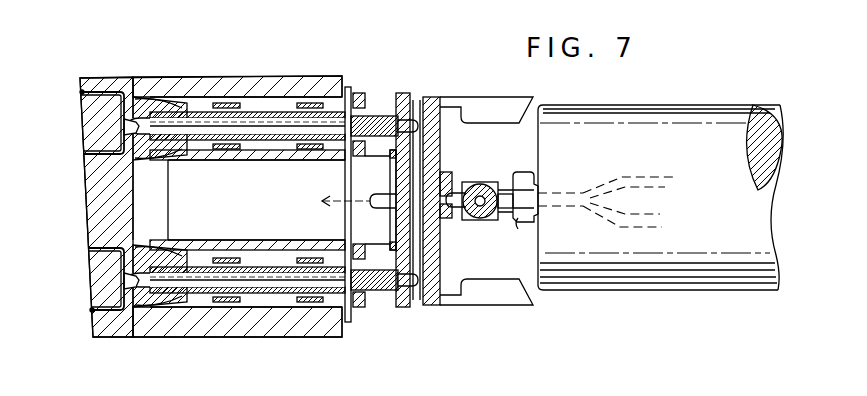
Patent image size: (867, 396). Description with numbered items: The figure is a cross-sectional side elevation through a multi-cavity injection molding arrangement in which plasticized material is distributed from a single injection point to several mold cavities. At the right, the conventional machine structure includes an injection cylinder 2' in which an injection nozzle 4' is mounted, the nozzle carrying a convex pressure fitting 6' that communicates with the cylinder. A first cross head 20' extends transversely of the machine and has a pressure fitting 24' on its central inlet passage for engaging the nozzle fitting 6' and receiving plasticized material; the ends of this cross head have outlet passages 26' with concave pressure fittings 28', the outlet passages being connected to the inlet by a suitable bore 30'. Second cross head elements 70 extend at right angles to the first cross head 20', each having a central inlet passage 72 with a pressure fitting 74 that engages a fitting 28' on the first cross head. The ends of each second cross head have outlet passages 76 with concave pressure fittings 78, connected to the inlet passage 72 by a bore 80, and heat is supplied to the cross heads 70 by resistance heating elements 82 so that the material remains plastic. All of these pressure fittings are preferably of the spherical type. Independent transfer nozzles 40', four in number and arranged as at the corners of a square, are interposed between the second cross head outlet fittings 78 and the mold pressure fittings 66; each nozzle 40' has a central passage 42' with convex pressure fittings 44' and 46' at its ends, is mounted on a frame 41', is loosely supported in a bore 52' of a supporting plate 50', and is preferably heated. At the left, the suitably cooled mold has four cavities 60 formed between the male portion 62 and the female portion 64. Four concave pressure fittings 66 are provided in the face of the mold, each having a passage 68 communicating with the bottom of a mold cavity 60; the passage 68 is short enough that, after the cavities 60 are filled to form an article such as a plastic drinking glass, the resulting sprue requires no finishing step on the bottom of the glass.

The injection cylinder 2' is at (660, 182).
The injection nozzle 4' is at (523, 183).
The convex pressure fitting 6' is at (528, 232).
The cross head 20' is at (489, 166).
The pressure fitting 24' is at (514, 234).
The outlet passage 26' is at (479, 221).
The concave pressure fitting 28' is at (473, 183).
The bore 30' is at (479, 228).
The transfer nozzle 40' is at (237, 206).
The frame 41' is at (359, 219).
The central passage 42' is at (247, 201).
The convex pressure fitting 44' is at (378, 197).
The convex pressure fitting 46' is at (160, 211).
The supporting plate 50' is at (237, 68).
The bore 52' is at (236, 210).
The cavity 60 is at (82, 92).
The male portion 62 is at (87, 120).
The female portion 64 is at (95, 204).
The concave pressure fitting 66 is at (130, 118).
The passage 68 is at (104, 93).
The second cross head element 70 is at (441, 97).
The central inlet passage 72 is at (446, 170).
The pressure fitting 74 is at (446, 218).
The outlet passage 76 is at (428, 97).
The concave pressure fitting 78 is at (410, 120).
The bore 80 is at (466, 290).
The resistance heating element 82 is at (391, 153).